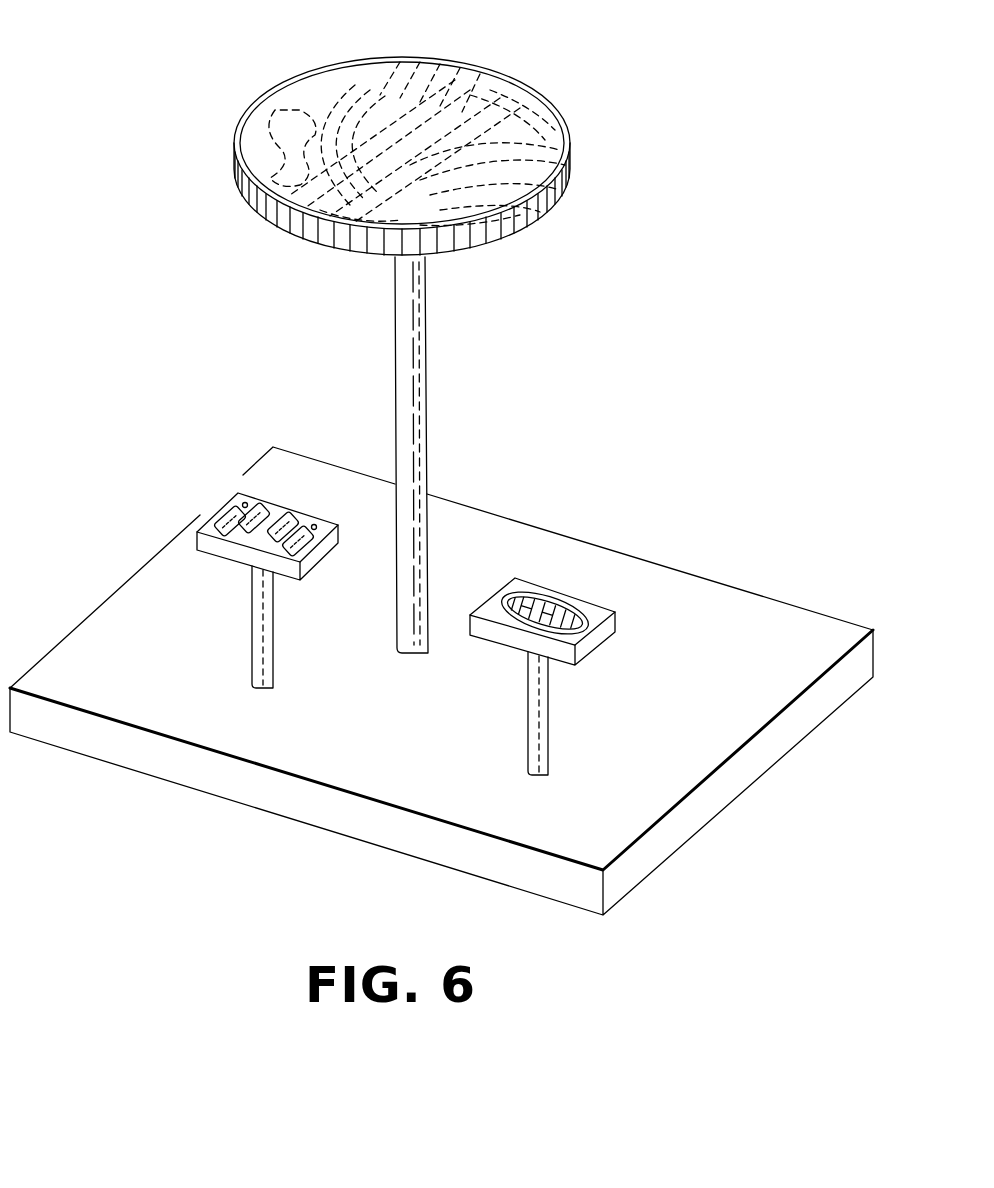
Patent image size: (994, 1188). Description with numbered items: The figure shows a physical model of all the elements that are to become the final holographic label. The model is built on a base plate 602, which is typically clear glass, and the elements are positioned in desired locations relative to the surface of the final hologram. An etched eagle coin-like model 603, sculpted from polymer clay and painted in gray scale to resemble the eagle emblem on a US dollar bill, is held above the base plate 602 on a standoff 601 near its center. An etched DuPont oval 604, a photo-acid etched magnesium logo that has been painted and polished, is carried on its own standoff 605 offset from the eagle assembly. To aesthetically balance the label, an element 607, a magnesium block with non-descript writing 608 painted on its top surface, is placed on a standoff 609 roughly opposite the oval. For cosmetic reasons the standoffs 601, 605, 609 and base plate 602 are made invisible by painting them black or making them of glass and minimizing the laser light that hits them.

The standoff 601 is at (390, 352).
The base plate 602 is at (727, 808).
The etched eagle coin-like model 603 is at (530, 92).
The etched DuPont oval 604 is at (590, 600).
The standoff 605 is at (523, 740).
The element with non-descript writing 607 is at (222, 547).
The non-descript writing 608 is at (262, 505).
The standoff 609 is at (258, 645).